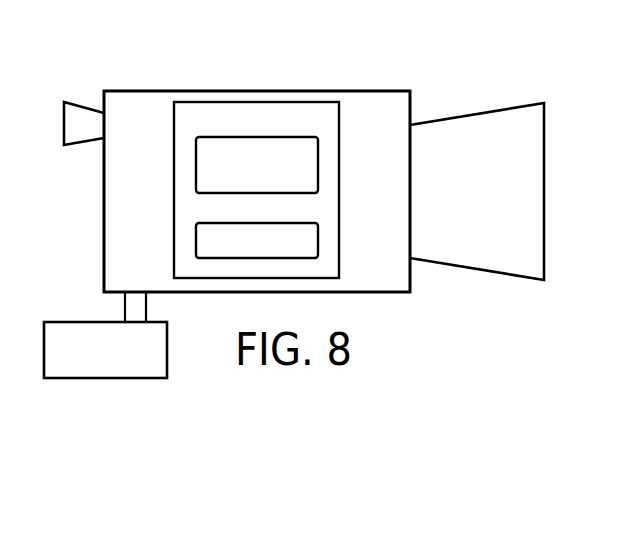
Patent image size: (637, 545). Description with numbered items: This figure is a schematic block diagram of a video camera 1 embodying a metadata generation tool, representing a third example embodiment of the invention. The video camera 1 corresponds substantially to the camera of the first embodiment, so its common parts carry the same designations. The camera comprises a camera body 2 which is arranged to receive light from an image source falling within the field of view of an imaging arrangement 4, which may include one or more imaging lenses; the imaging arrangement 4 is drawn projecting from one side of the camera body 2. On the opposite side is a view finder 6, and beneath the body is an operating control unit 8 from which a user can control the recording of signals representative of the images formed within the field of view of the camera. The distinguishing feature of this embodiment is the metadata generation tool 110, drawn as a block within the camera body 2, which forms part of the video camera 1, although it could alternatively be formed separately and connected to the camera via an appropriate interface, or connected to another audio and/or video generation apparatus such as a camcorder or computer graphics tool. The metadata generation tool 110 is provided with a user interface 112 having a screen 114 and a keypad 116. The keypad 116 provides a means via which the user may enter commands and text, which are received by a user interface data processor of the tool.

The video camera 1 is at (337, 67).
The camera body 2 is at (125, 99).
The imaging arrangement 4 is at (488, 121).
The view finder 6 is at (78, 141).
The operating control unit 8 is at (73, 368).
The metadata generation tool 110 is at (200, 103).
The user interface 112 is at (219, 131).
The screen 114 is at (318, 180).
The keypad 116 is at (318, 242).